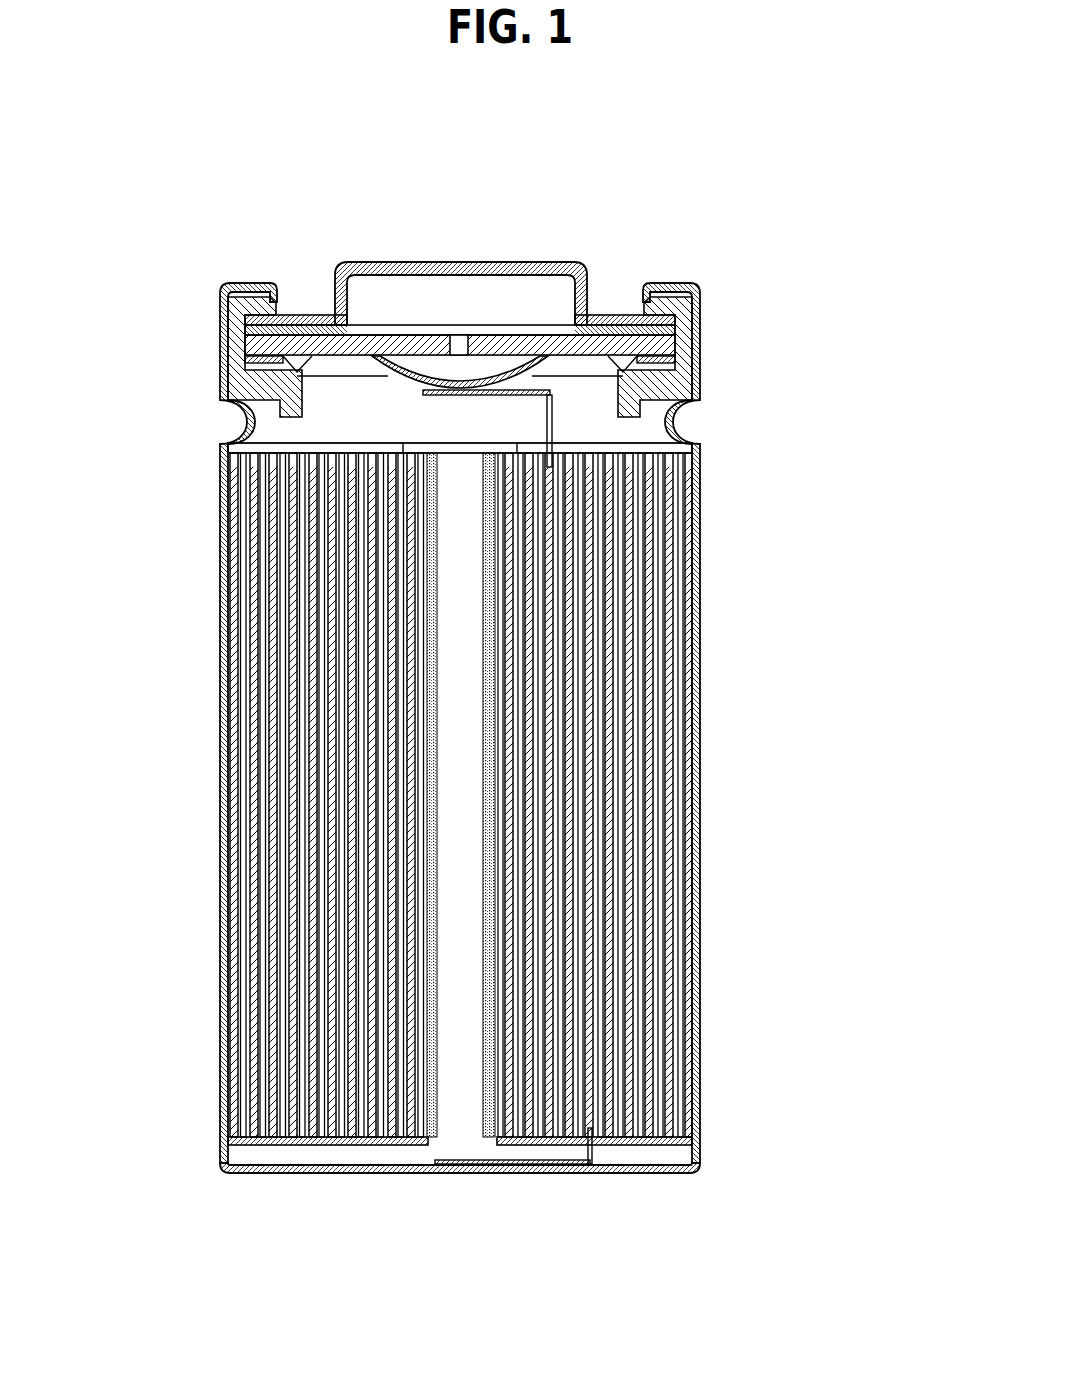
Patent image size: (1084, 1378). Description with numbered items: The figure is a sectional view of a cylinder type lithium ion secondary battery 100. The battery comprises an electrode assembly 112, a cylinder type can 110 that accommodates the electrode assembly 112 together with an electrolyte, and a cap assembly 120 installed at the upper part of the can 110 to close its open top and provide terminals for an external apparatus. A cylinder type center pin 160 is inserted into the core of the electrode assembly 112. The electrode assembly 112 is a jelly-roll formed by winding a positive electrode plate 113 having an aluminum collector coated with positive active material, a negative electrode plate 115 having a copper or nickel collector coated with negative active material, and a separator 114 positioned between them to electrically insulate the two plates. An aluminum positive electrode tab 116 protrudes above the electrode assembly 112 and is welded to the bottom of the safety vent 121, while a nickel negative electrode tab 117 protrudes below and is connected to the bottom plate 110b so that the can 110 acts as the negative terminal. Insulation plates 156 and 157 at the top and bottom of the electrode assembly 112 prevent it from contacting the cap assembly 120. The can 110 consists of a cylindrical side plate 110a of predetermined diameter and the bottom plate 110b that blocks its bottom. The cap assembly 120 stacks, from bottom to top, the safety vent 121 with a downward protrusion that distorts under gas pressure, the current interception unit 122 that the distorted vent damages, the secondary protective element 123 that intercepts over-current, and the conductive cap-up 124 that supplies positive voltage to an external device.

The cylinder type lithium ion secondary battery 100 is at (888, 162).
The cylinder type can 110 is at (225, 350).
The side plate 110a is at (222, 808).
The bottom plate 110b is at (373, 1172).
The electrode assembly 112 is at (862, 420).
The positive electrode plate 113 is at (692, 512).
The separator 114 is at (680, 573).
The negative electrode plate 115 is at (675, 617).
The positive electrode tab 116 is at (553, 400).
The negative electrode tab 117 is at (593, 1153).
The cap assembly 120 is at (565, 152).
The safety vent 121 is at (416, 345).
The current interception unit 122 is at (498, 352).
The secondary protective element 123 is at (556, 332).
The cap-up 124 is at (356, 258).
The insulation plate 156 is at (228, 446).
The insulation plate 157 is at (262, 1147).
The center pin 160 is at (485, 930).